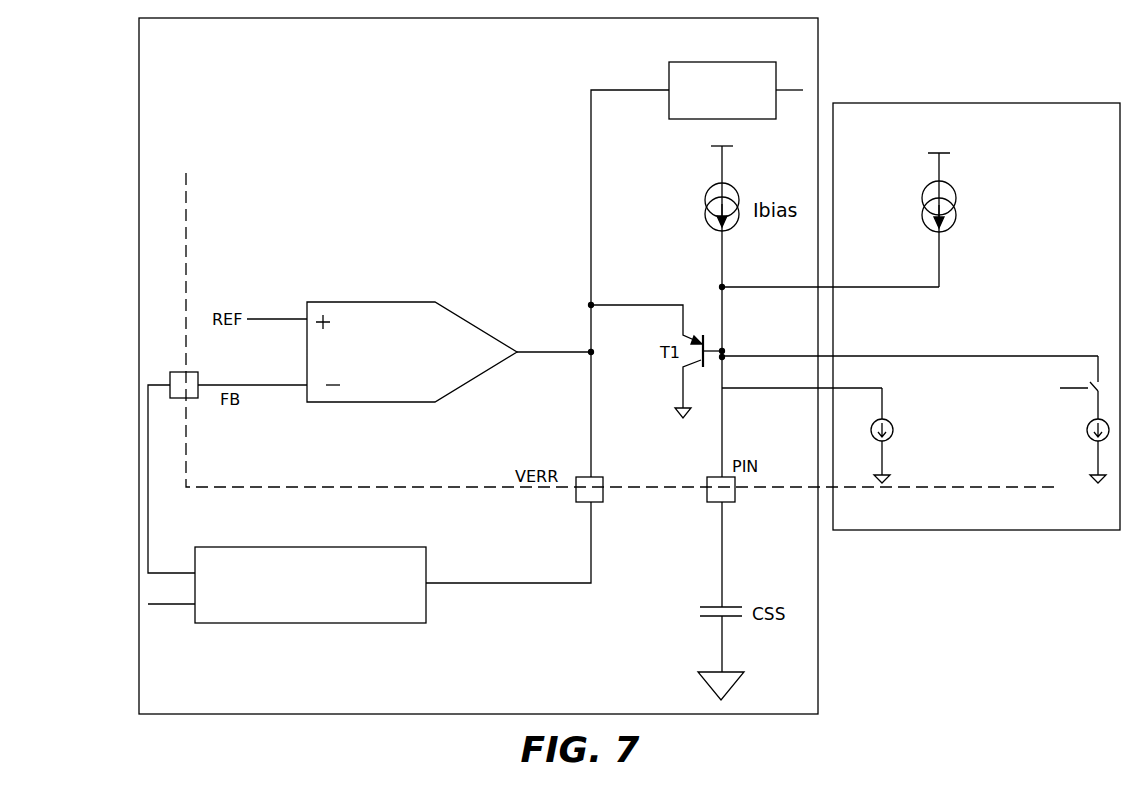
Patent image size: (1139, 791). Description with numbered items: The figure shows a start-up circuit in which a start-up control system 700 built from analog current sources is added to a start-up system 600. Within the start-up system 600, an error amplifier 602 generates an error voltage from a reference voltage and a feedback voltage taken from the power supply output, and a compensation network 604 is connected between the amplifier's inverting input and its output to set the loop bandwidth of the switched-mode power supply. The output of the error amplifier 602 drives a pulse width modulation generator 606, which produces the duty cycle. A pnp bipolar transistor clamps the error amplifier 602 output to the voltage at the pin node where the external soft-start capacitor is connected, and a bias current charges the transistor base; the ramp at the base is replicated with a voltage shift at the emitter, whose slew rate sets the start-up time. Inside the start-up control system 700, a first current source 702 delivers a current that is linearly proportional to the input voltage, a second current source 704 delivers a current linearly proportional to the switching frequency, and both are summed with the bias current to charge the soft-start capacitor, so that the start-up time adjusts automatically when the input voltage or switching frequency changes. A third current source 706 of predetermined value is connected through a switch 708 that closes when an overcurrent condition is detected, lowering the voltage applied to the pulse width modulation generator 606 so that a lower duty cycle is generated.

The start-up system 600 is at (139, 45).
The error amplifier 602 is at (344, 302).
The compensation network 604 is at (311, 547).
The pulse width modulation (PWM) generator 606 is at (703, 62).
The start-up control system 700 is at (985, 96).
The current source I1 = K1*Vin 702 is at (878, 420).
The current source I2 = K2*fsw 704 is at (929, 192).
The current source I3 706 is at (1090, 420).
The overcurrent switch 708 is at (1091, 384).